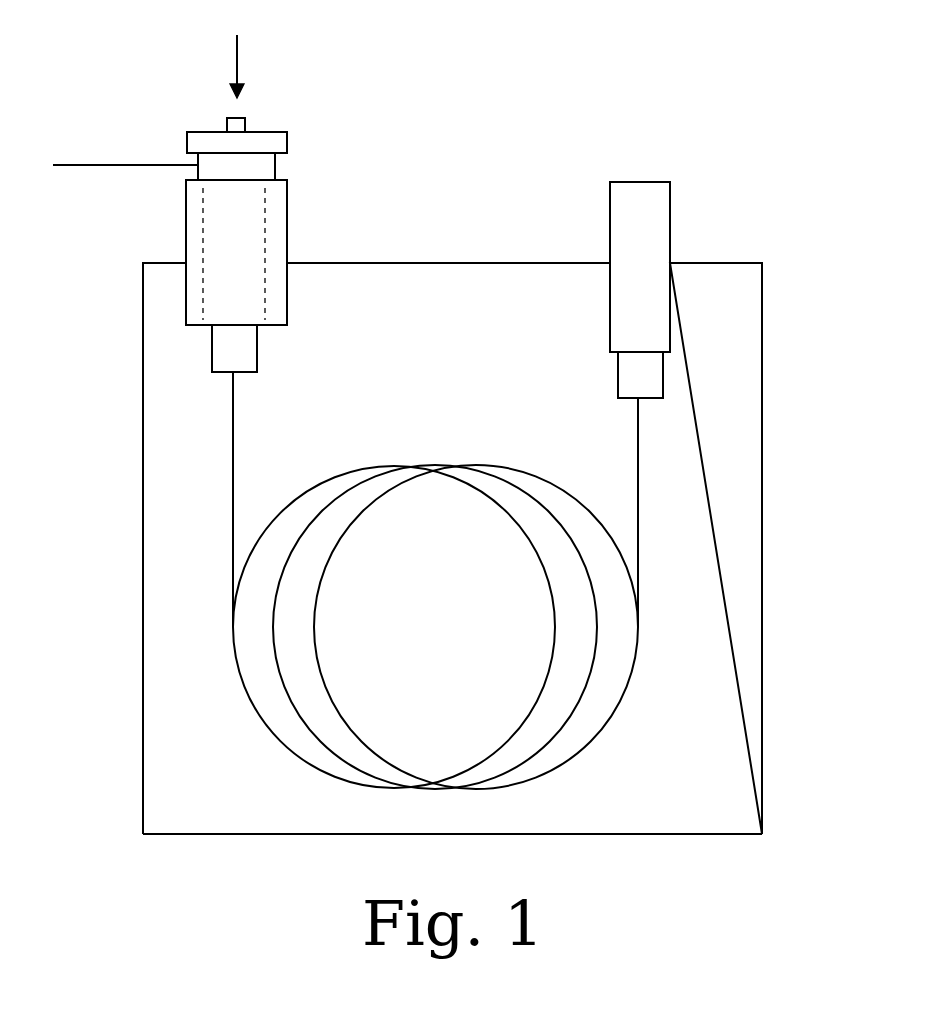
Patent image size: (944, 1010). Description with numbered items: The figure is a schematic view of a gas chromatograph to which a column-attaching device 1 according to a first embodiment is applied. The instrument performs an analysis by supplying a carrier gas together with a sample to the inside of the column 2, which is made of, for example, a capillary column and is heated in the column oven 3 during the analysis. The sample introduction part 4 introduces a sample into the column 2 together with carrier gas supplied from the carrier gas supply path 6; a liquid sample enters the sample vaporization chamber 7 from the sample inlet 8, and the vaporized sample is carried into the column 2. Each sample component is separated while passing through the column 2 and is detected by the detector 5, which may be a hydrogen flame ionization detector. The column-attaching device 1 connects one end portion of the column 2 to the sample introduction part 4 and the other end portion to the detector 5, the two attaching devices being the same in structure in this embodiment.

The column-attaching device 1 is at (212, 350).
The column 2 is at (607, 722).
The column oven 3 is at (762, 618).
The sample introduction part 4 is at (287, 208).
The detector 5 is at (670, 210).
The carrier gas supply path 6 is at (98, 165).
The sample vaporization chamber 7 is at (217, 238).
The sample inlet 8 is at (237, 117).